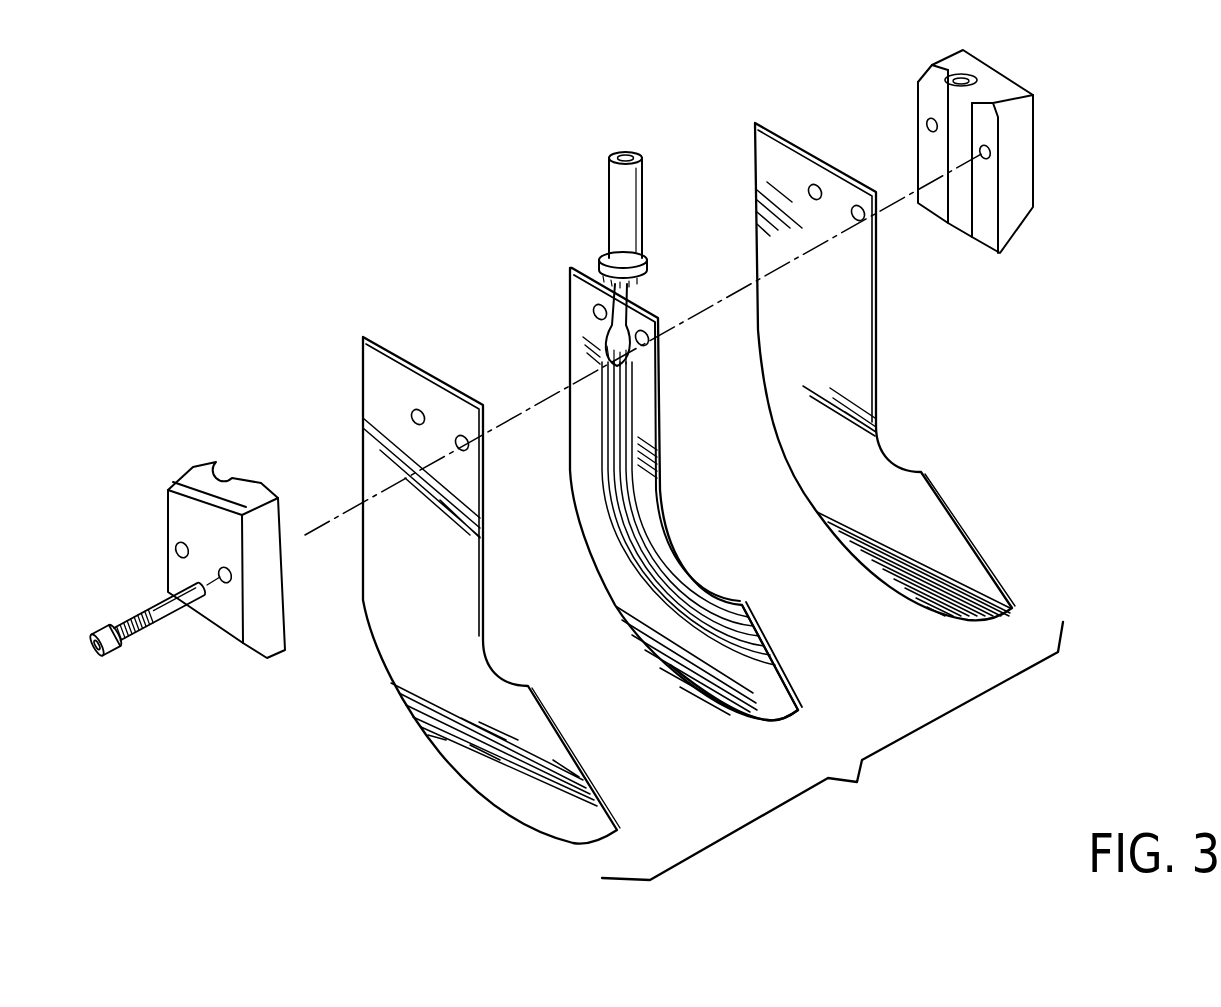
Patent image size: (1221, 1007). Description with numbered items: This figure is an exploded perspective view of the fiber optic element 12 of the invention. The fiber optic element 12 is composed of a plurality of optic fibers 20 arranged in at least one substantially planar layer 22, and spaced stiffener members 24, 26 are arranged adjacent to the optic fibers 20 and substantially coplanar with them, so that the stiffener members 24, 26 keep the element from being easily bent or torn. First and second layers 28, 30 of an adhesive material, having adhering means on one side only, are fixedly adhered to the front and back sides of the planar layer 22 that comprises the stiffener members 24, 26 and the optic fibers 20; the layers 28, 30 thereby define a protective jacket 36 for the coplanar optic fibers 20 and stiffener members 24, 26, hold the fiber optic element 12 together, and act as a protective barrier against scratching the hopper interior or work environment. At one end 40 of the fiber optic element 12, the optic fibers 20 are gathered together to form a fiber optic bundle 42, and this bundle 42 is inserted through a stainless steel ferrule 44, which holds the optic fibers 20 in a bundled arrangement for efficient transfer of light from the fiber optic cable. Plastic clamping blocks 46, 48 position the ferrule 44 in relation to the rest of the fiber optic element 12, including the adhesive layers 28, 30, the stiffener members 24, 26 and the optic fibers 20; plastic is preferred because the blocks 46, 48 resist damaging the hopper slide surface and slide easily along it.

The fiber optic element 12 is at (390, 142).
The optic fibers 20 is at (772, 653).
The planar layer 22 is at (752, 610).
The stiffener member 24 is at (721, 527).
The stiffener member 26 is at (756, 720).
The first layer 28 is at (488, 640).
The second layer 30 is at (880, 425).
The protective jacket 36 is at (857, 782).
The end 40 is at (622, 150).
The fiber optic bundle 42 is at (603, 328).
The ferrule 44 is at (567, 222).
The clamping block 46 is at (218, 468).
The clamping block 48 is at (1038, 175).